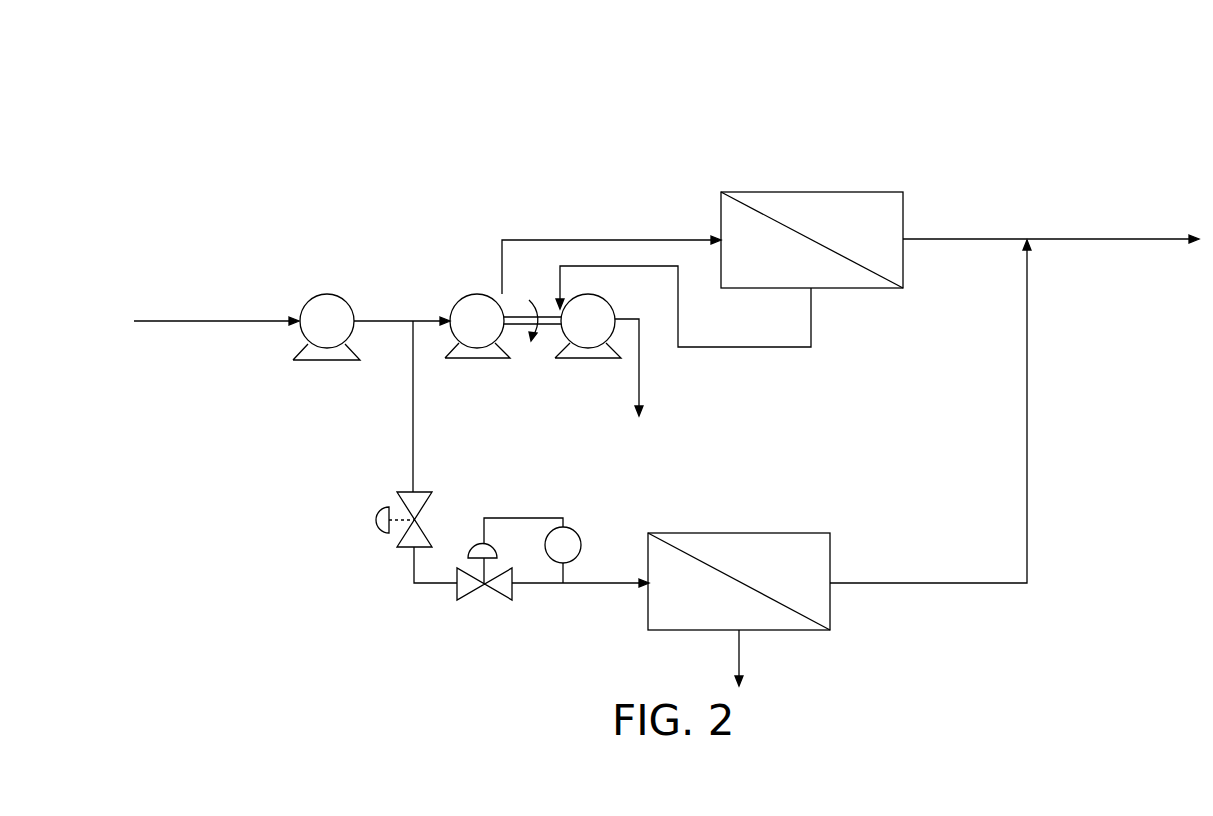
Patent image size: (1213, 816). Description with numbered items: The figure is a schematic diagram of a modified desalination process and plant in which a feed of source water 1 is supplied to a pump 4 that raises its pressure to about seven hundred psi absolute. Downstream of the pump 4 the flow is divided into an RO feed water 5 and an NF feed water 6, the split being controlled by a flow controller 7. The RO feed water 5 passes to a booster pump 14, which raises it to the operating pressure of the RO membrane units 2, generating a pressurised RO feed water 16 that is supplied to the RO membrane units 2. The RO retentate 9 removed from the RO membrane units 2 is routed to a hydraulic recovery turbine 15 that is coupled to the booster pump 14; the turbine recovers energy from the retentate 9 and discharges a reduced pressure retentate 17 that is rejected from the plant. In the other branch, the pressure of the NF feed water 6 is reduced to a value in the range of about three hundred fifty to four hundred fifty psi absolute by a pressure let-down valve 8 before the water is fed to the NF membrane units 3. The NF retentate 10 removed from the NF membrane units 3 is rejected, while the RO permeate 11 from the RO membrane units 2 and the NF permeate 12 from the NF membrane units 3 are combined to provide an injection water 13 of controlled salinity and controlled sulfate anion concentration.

The source water 1 is at (212, 321).
The RO membrane units 2 is at (883, 192).
The NF membrane units 3 is at (812, 533).
The pump 4 is at (327, 362).
The RO feed water 5 is at (425, 321).
The NF feed water 6 is at (415, 445).
The flow controller 7 is at (373, 520).
The pressure let-down valve 8 is at (494, 601).
The RO retentate 9 is at (813, 325).
The NF retentate 10 is at (742, 667).
The RO permeate 11 is at (985, 239).
The NF permeate 12 is at (946, 584).
The injection water 13 is at (1167, 239).
The booster pump 14 is at (475, 360).
The hydraulic recovery turbine 15 is at (585, 360).
The pressurised RO feed water 16 is at (521, 240).
The reduced pressure retentate 17 is at (643, 399).